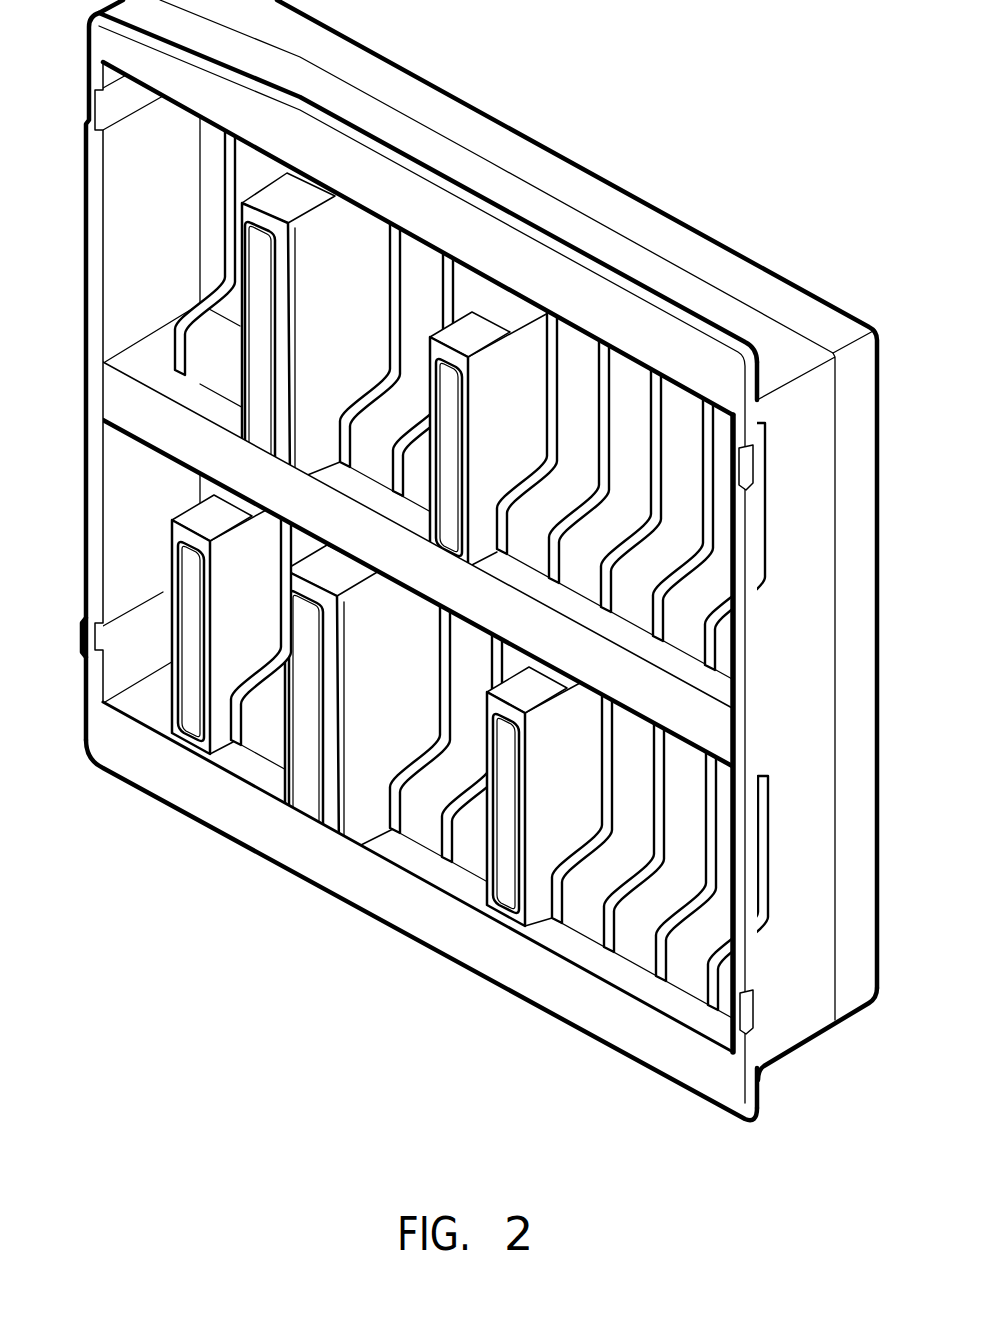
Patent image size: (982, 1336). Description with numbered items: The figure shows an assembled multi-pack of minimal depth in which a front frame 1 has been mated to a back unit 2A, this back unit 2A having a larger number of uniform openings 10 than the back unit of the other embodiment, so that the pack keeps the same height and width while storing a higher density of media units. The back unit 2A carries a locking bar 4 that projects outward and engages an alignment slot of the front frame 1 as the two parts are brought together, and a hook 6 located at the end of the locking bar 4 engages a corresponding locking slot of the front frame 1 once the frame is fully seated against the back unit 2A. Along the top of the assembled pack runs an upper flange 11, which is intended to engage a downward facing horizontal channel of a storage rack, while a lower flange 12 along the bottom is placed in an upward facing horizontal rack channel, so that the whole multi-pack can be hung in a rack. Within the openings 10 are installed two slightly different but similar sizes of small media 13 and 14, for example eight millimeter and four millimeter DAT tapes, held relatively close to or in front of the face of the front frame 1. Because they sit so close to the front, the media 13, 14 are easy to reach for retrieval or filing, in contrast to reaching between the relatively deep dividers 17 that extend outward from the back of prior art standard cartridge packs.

The front frame 1 is at (815, 745).
The back unit 2A is at (873, 635).
The locking bar 4 is at (104, 640).
The hook 6 is at (747, 473).
The uniform opening 10 is at (630, 385).
The upper flange 11 is at (452, 222).
The lower flange 12 is at (447, 928).
The small media 13 is at (346, 514).
The small media 14 is at (520, 445).
The divider 17 is at (368, 438).